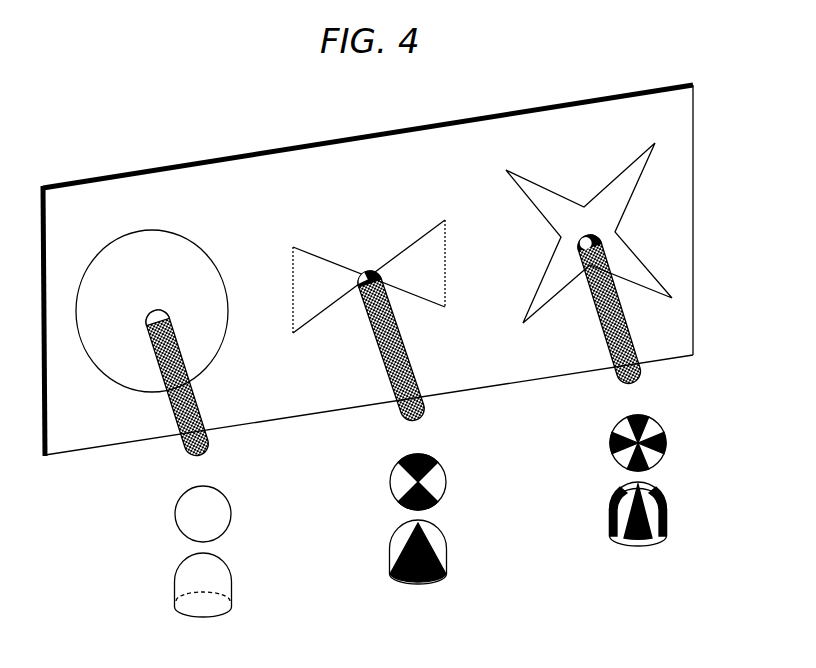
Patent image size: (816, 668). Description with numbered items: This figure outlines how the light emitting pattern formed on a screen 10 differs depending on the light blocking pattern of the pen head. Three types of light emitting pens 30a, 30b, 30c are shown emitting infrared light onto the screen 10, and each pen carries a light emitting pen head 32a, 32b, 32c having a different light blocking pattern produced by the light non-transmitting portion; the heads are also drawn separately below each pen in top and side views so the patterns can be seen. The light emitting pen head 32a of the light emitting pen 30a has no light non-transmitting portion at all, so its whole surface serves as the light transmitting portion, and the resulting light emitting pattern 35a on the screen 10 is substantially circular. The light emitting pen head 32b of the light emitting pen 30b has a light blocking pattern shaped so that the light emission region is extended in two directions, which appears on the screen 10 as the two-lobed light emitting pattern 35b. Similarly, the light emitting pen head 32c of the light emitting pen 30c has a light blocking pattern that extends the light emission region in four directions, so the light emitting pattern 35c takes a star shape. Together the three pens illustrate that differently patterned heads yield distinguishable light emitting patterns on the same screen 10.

The screen 10 is at (107, 176).
The light emitting pen 30a is at (218, 447).
The light emitting pen 30b is at (435, 410).
The light emitting pen 30c is at (652, 375).
The light emitting pen head 32a is at (172, 577).
The light emitting pen head 32b is at (392, 545).
The light emitting pen head 32c is at (608, 507).
The light emitting pattern 35a is at (207, 242).
The light emitting pattern 35b is at (323, 258).
The light emitting pattern 35c is at (548, 189).